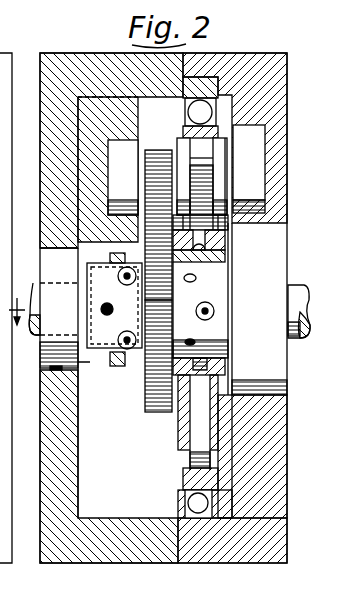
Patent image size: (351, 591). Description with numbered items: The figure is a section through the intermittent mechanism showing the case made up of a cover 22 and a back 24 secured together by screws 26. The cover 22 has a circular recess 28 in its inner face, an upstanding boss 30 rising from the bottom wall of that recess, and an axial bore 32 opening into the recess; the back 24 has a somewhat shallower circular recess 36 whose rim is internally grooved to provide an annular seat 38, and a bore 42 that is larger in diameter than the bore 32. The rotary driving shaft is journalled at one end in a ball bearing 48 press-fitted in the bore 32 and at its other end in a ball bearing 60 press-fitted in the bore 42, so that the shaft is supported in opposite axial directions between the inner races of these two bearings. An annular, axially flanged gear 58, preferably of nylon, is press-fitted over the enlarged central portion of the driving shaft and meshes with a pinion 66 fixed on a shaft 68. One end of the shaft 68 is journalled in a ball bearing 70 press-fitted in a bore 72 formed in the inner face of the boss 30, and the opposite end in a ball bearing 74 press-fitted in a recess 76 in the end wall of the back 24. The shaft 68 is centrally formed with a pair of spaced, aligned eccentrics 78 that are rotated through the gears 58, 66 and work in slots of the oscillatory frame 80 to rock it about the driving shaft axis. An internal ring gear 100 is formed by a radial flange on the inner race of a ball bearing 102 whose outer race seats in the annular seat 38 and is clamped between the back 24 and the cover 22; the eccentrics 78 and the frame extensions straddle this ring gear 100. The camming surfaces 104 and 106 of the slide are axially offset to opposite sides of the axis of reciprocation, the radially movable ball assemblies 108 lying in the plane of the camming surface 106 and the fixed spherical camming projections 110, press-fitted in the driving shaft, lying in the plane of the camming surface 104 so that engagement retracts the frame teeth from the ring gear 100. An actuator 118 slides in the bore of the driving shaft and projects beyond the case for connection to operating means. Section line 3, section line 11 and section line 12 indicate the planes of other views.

The section line 3- 3 is at (17, 303).
The section line 11- 11 is at (141, 322).
The section line 12- 12 is at (119, 295).
The cover 22 is at (63, 565).
The back 24 is at (270, 565).
The screws 26 is at (0, 504).
The circular recess 28 is at (78, 494).
The upstanding boss 30 is at (138, 114).
The axial bore 32 is at (55, 369).
The circular recess 36 is at (229, 455).
The annular seat 38 is at (221, 91).
The bore 42 is at (265, 400).
The ball bearing 48 is at (78, 363).
The gear 58 is at (158, 413).
The ball bearing 60 is at (262, 395).
The pinion 66 is at (157, 150).
The shaft 68 is at (232, 152).
The ball bearing 70 is at (122, 142).
The bore 72 is at (112, 222).
The ball bearing 74 is at (255, 197).
The recess 76 is at (262, 172).
The eccentrics 78 is at (181, 138).
The oscillatory frame 80 is at (226, 245).
The internal ring gear 100 is at (178, 478).
The ball bearing 102 is at (183, 490).
The camming surface 104 is at (226, 258).
The camming surface 106 is at (226, 365).
The ball assemblies 108 is at (215, 311).
The camming projections 110 is at (197, 281).
The actuator 118 is at (298, 285).